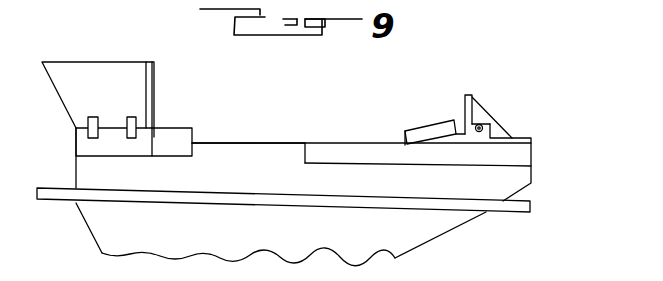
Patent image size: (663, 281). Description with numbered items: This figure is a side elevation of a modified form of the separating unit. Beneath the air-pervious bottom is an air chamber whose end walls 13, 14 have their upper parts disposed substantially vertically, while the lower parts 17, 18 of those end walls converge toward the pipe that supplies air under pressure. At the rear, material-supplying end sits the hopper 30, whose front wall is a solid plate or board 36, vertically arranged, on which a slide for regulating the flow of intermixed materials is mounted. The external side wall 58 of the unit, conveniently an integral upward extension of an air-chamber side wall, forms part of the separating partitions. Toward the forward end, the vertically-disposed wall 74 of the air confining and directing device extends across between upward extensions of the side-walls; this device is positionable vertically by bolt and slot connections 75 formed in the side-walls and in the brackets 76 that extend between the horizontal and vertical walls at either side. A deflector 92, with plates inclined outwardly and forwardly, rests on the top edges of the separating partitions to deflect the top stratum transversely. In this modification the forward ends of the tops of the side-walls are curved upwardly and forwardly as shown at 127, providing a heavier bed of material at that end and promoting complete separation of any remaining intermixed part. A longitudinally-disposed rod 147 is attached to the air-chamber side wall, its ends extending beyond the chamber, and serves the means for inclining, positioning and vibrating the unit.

The end wall 13 is at (75, 177).
The end wall 14 is at (533, 179).
The lower part of end wall 17 is at (90, 233).
The lower part of end wall 18 is at (410, 258).
The hopper 30 is at (122, 46).
The front wall 36 is at (153, 90).
The external side wall 58 is at (243, 142).
The vertically-disposed wall 74 is at (473, 97).
The bolt and slot connection 75 is at (481, 126).
The bracket 76 is at (508, 130).
The deflector 92 is at (405, 135).
The upwardly curved forward end of side-wall top 127 is at (444, 147).
The longitudinally-disposed rod 147 is at (428, 203).